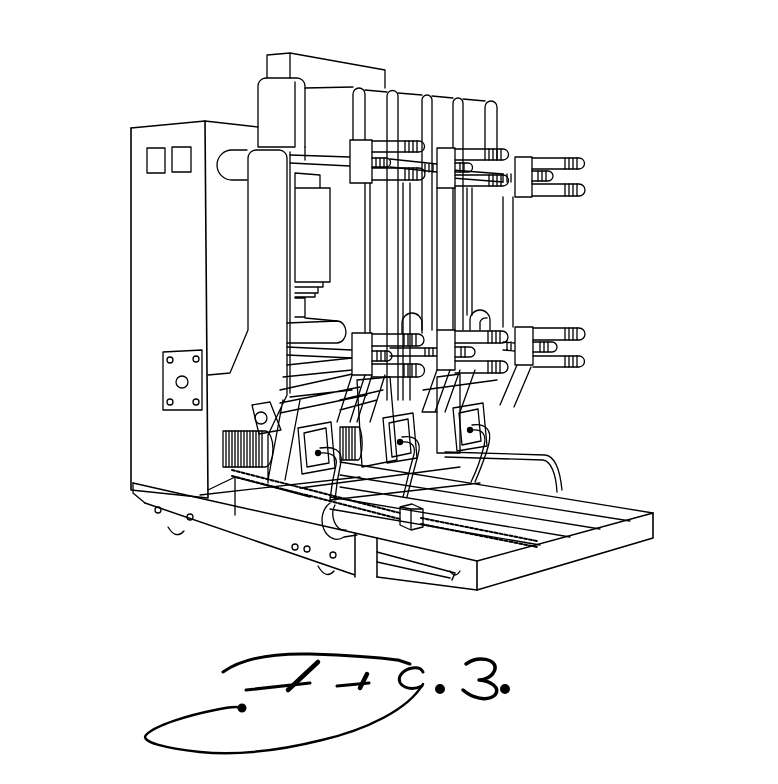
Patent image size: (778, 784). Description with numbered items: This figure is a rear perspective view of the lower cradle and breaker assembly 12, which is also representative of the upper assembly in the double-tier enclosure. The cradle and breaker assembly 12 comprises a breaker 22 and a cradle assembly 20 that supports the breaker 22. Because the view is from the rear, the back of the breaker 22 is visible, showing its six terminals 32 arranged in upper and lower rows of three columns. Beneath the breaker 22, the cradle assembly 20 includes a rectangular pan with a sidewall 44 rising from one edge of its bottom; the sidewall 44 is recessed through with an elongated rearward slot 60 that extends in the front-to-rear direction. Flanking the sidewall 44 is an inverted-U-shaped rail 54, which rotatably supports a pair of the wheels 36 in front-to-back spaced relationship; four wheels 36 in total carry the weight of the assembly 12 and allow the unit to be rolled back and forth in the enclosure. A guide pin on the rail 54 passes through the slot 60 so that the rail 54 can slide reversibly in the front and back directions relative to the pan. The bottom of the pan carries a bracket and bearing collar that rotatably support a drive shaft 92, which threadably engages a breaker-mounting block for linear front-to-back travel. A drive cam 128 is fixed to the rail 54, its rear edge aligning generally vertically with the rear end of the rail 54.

The cradle and breaker assembly 12 is at (140, 68).
The cradle assembly 20 is at (146, 503).
The breaker 22 is at (134, 292).
The terminals 32 is at (555, 163).
The wheels 36 is at (172, 530).
The sidewall 44 is at (395, 570).
The rail 54 is at (248, 540).
The rearward slot 60 is at (455, 574).
The drive shaft 92 is at (490, 540).
The drive cam 128 is at (560, 471).